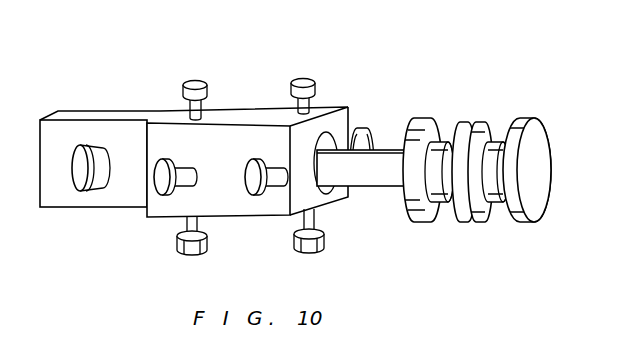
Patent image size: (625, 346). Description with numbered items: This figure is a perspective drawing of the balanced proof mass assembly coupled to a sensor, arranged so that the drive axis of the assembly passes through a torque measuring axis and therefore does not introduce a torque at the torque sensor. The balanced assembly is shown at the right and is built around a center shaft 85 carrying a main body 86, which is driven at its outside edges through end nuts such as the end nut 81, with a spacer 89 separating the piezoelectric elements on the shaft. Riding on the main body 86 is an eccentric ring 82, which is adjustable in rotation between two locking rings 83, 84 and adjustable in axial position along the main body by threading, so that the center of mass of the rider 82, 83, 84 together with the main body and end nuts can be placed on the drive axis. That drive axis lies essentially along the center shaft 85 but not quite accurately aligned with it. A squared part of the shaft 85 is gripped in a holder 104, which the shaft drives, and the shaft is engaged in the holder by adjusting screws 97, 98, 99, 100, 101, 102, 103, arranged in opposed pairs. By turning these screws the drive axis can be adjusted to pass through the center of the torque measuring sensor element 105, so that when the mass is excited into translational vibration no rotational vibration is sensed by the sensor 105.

The end nut 81 is at (419, 120).
The eccentric ring 82 is at (477, 124).
The locking ring 83 is at (493, 126).
The locking ring 84 is at (470, 122).
The center shaft 85 is at (387, 149).
The main body 86 is at (441, 204).
The spacer 89 is at (497, 204).
The adjusting screw 97 is at (357, 128).
The adjusting screw 98 is at (193, 84).
The adjusting screw 99 is at (305, 81).
The adjusting screw 100 is at (160, 162).
The adjusting screw 101 is at (246, 178).
The adjusting screw 102 is at (206, 237).
The adjusting screw 103 is at (323, 233).
The holder 104 is at (167, 203).
The torque measuring sensor element 105 is at (77, 172).